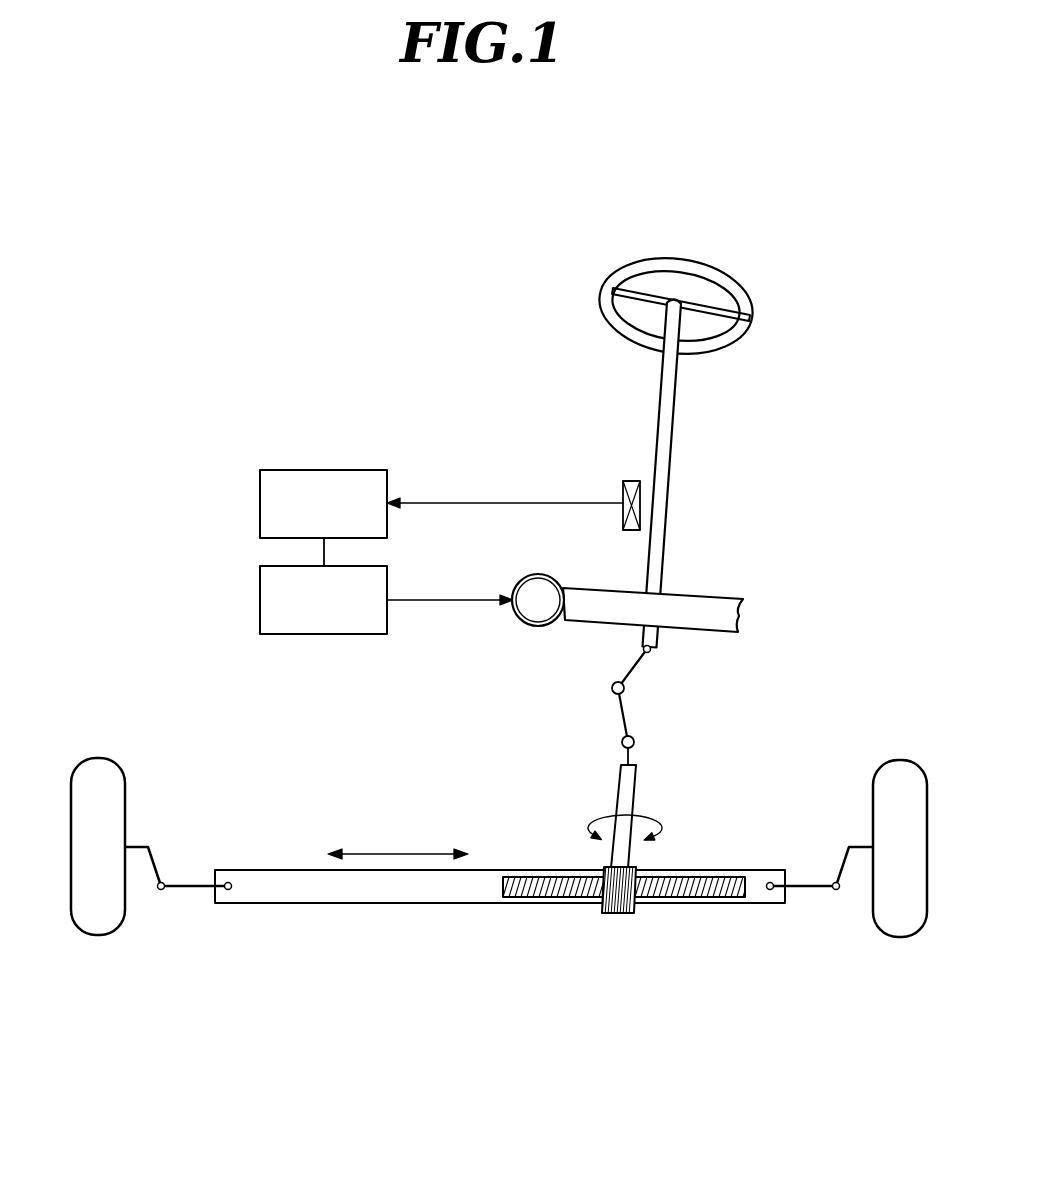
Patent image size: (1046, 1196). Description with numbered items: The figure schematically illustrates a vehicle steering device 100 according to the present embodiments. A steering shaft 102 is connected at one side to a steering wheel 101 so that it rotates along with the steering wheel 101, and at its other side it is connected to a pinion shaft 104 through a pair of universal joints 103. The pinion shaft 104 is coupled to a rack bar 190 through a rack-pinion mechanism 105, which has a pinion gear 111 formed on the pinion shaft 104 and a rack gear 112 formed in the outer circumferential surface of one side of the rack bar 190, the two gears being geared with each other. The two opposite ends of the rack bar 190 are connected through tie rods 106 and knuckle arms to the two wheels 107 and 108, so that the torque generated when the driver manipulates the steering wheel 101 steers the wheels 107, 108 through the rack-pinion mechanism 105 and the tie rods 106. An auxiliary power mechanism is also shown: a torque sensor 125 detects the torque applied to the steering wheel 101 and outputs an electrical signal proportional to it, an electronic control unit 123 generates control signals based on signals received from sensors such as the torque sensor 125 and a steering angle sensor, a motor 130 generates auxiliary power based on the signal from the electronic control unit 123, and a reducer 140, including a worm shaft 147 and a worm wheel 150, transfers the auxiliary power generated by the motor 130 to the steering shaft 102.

The steering system 100 is at (787, 158).
The steering wheel 101 is at (602, 295).
The steering shaft 102 is at (673, 430).
The universal joints 103 is at (632, 670).
The pinion shaft 104 is at (618, 798).
The rack-pinion mechanism 105 is at (639, 993).
The tie rods 106 is at (815, 885).
The wheel 107 is at (137, 845).
The wheel 108 is at (898, 770).
The pinion gear 111 is at (612, 913).
The rack gear 112 is at (670, 900).
The electronic control unit 123 is at (367, 470).
The torque sensor 125 is at (623, 490).
The motor 130 is at (260, 601).
The reducer 140 is at (758, 575).
The worm shaft 147 is at (537, 608).
The worm wheel 150 is at (740, 618).
The rack bar 190 is at (347, 893).